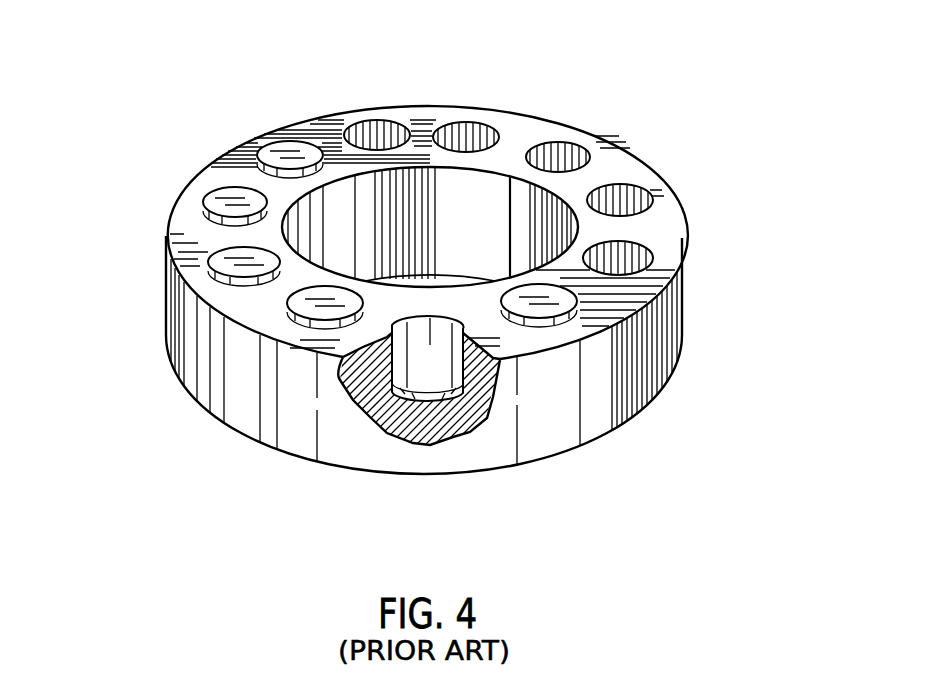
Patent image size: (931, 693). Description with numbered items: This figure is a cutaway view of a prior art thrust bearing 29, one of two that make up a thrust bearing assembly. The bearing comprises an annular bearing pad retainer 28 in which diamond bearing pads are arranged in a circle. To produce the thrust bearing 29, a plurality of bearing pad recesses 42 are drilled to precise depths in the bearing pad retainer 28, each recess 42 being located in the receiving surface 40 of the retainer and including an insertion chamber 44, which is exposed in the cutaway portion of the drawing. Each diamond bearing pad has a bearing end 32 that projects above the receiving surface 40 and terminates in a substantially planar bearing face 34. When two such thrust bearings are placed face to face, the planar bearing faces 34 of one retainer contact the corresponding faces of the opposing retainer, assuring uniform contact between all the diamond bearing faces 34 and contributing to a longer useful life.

The bearing pad retainer 28 is at (182, 297).
The thrust bearing 29 is at (693, 167).
The bearing end 32 is at (563, 323).
The bearing face 34 is at (528, 312).
The receiving surface 40 is at (328, 345).
The bearing pad recesses 42 is at (638, 262).
The insertion chamber 44 is at (430, 358).